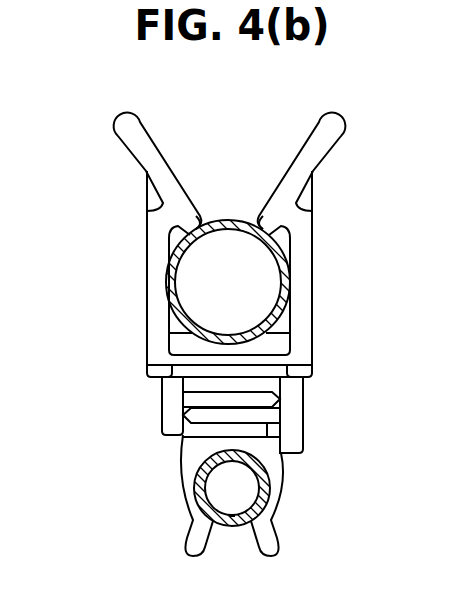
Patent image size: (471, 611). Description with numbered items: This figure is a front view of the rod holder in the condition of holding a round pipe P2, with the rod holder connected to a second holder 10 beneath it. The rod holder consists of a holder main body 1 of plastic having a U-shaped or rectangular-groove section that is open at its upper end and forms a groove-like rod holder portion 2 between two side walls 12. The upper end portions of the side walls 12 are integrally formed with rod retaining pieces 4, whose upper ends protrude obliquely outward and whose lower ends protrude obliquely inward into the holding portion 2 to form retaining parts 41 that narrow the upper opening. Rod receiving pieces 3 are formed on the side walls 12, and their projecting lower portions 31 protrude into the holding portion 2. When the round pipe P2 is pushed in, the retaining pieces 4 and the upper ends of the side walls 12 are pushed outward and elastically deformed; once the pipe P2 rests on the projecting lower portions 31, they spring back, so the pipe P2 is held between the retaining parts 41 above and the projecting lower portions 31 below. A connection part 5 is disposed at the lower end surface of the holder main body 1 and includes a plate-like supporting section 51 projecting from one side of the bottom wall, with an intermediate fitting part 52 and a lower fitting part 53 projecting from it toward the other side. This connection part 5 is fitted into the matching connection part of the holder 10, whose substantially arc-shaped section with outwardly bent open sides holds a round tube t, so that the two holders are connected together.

The holder main body 1 is at (318, 212).
The rod holder portion 2 is at (193, 339).
The rod receiving piece 3 is at (172, 334).
The projecting lower portion 31 is at (188, 330).
The rod retaining piece 4 is at (150, 148).
The retaining part 41 is at (198, 218).
The connection part 5 is at (172, 418).
The supporting section 51 is at (172, 421).
The intermediate fitting part 52 is at (288, 398).
The lower fitting part 53 is at (197, 438).
The holder 10 is at (278, 500).
The side wall 12 is at (150, 263).
The round pipe P2 is at (290, 285).
The round tube t is at (232, 518).